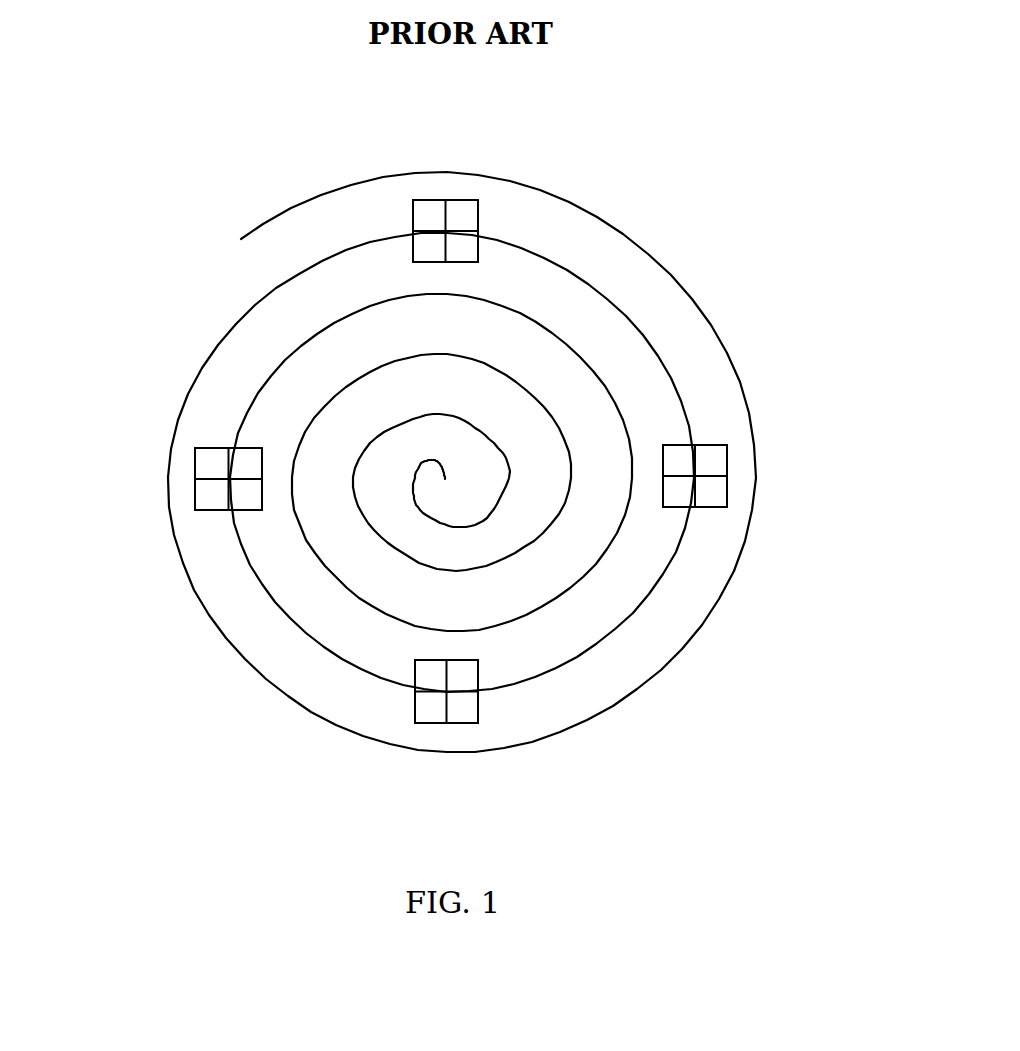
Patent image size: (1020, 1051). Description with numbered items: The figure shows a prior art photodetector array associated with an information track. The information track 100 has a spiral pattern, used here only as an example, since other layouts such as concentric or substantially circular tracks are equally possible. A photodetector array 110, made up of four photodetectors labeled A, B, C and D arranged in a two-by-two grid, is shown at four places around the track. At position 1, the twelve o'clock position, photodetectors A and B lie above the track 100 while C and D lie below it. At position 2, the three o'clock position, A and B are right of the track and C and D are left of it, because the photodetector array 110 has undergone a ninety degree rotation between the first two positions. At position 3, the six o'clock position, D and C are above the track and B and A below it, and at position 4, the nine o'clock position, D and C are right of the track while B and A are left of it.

The information track 100 is at (260, 212).
The photodetector array 110 is at (459, 459).
The position 1 is at (445, 178).
The position 2 is at (745, 473).
The position 3 is at (447, 746).
The position 4 is at (150, 479).